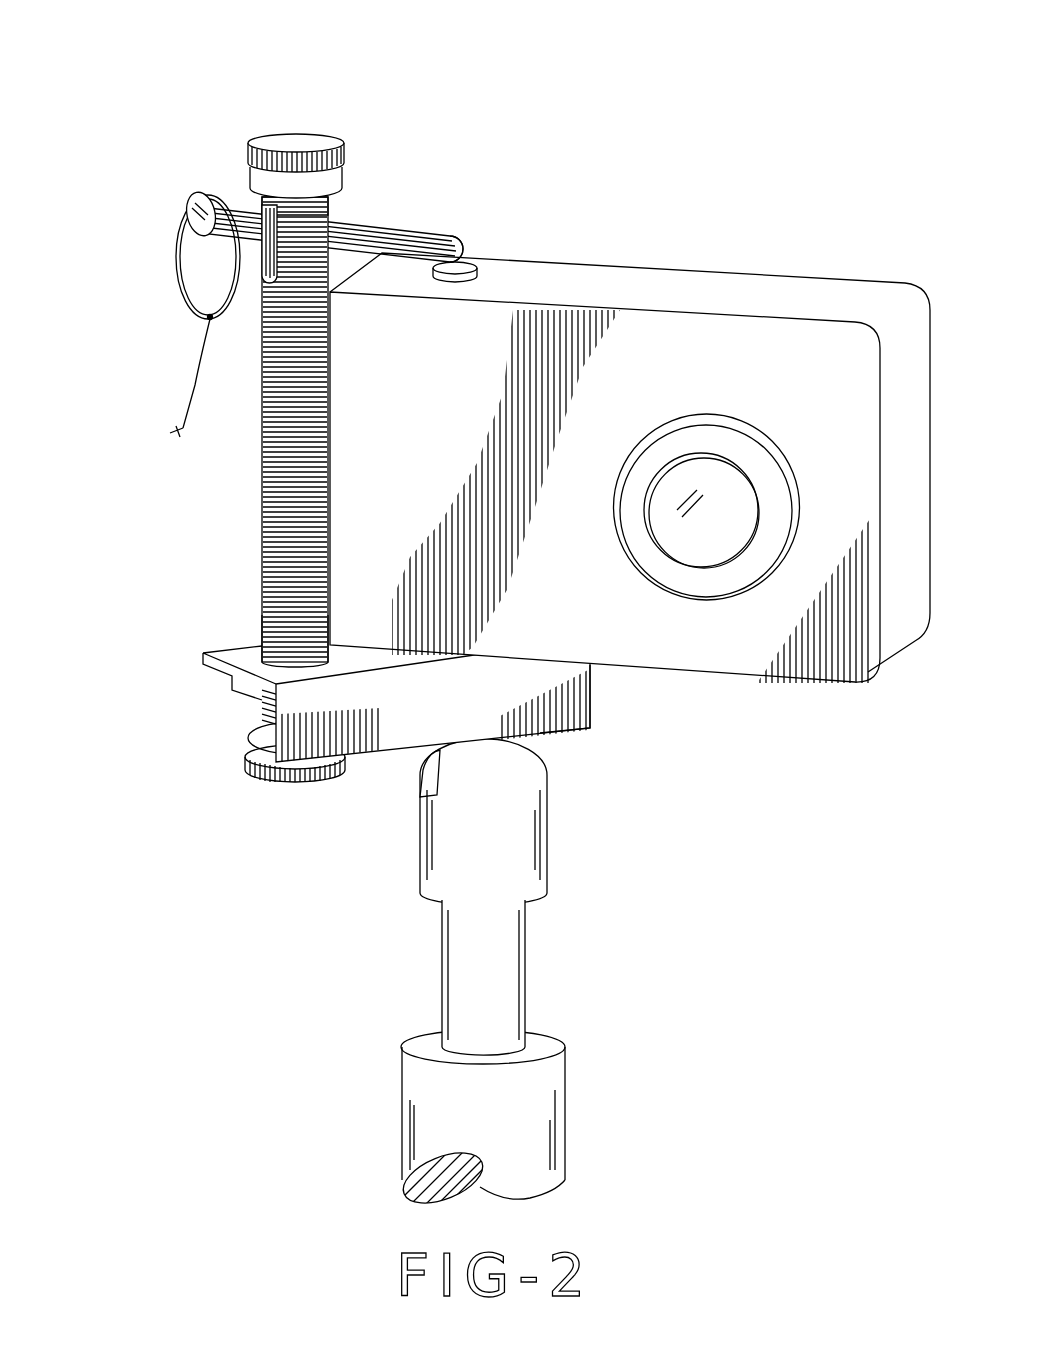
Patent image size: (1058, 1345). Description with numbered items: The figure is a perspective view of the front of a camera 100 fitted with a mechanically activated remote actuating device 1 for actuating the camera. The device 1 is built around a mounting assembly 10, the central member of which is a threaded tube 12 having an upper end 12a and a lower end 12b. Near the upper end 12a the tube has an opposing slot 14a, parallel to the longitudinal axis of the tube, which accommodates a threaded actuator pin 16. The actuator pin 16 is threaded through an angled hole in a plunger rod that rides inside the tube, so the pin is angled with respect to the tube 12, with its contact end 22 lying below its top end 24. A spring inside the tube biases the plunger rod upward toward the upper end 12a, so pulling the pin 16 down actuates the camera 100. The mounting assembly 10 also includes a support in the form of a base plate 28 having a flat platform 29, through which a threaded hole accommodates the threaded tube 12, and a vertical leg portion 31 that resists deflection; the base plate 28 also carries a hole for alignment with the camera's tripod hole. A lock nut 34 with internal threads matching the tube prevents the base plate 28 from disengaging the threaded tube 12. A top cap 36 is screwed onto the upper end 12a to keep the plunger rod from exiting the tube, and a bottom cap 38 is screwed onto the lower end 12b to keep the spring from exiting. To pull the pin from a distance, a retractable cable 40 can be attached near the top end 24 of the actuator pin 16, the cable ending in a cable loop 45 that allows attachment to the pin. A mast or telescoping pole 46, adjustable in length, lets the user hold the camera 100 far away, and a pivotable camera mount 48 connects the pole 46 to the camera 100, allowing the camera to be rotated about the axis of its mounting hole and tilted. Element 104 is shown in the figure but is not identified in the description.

The mechanically activated remote actuating device 1 is at (862, 163).
The mounting assembly 10 is at (217, 835).
The threaded tube 12 is at (260, 393).
The upper end 12a is at (325, 201).
The lower end 12b is at (262, 628).
The opposing slot 14a is at (263, 203).
The threaded actuator pin 16 is at (402, 233).
The contact end 22 is at (462, 243).
The top end 24 is at (186, 198).
The base plate 28 is at (572, 732).
The flat platform 29 is at (223, 652).
The vertical leg portion 31 is at (370, 703).
The lock nut 34 is at (228, 690).
The top cap 36 is at (278, 143).
The bottom cap 38 is at (245, 753).
The retractable cable 40 is at (203, 363).
The cable loop 45 is at (176, 252).
The telescoping pole 46 is at (565, 1107).
The pivotable camera mount 48 is at (553, 828).
The camera 100 is at (680, 268).
The mounting pad 104 is at (462, 270).